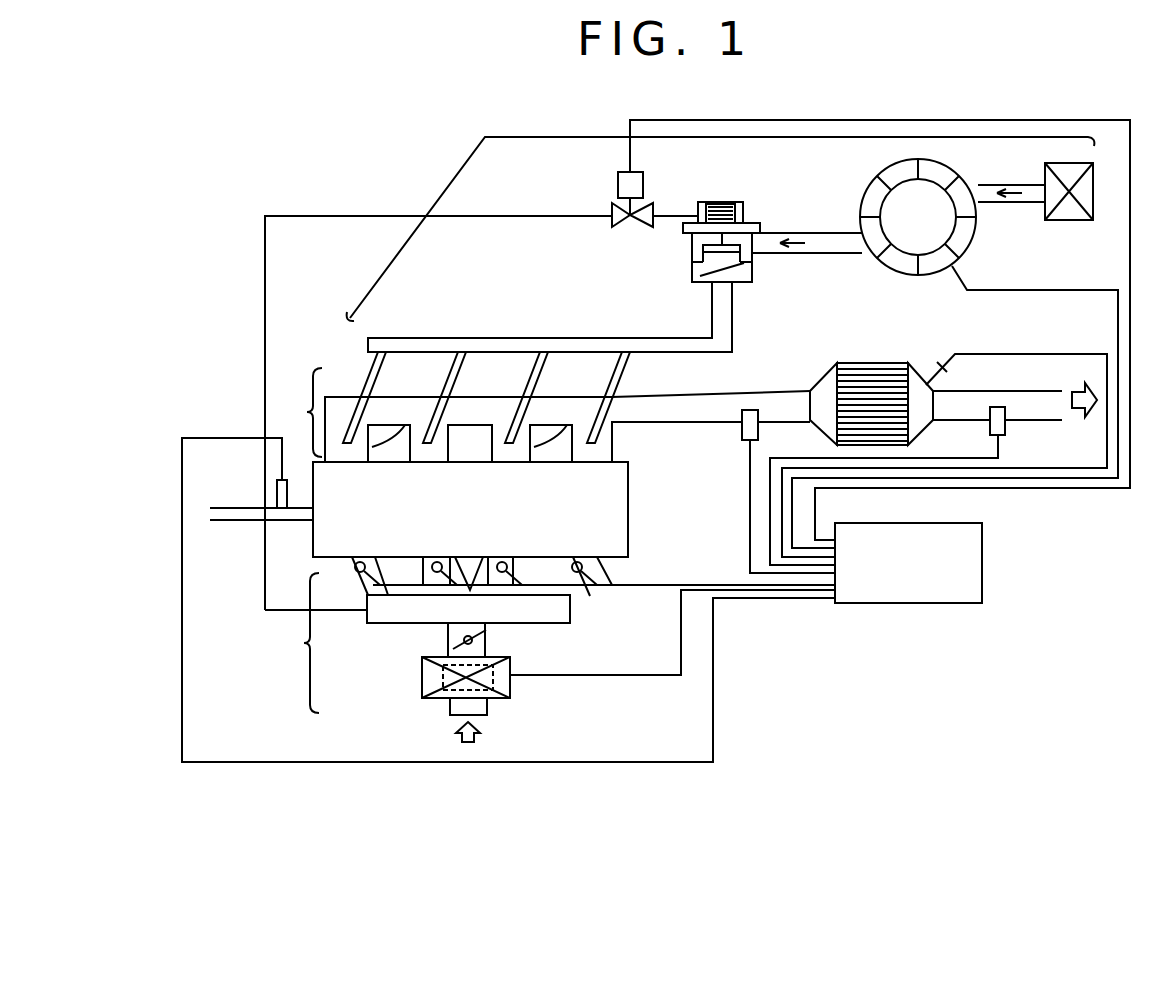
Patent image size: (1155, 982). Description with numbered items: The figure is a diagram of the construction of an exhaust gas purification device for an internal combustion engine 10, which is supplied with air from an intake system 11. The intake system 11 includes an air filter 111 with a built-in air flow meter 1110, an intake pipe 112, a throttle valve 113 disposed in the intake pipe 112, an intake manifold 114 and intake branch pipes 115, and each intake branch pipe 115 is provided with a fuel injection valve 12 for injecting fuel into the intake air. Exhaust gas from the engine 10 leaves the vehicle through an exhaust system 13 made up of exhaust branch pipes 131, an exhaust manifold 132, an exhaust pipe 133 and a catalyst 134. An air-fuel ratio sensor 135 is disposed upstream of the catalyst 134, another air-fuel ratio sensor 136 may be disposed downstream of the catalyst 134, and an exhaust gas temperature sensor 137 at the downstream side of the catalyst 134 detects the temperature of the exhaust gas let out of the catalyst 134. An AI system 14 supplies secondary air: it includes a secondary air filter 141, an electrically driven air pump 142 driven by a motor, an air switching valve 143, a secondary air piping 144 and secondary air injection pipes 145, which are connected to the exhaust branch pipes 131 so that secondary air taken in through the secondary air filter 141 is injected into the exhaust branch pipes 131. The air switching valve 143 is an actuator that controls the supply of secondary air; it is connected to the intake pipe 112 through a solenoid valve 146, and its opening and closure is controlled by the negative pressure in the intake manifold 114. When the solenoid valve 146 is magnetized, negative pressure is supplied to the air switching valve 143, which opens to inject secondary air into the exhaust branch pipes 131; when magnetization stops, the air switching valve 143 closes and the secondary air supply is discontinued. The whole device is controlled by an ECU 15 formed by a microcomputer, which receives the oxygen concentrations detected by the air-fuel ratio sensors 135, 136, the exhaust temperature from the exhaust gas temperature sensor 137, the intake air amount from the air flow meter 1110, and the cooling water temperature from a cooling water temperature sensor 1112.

The internal combustion engine 10 is at (628, 507).
The intake system 11 is at (297, 643).
The air filter 111 is at (510, 690).
The air flow meter 1110 is at (443, 680).
The cooling water temperature sensor 1112 is at (277, 490).
The intake pipe 112 is at (448, 640).
The throttle valve 113 is at (472, 640).
The intake manifold 114 is at (570, 610).
The intake branch pipes 115 is at (365, 560).
The fuel injection valve 12 is at (358, 576).
The exhaust system 13 is at (301, 412).
The exhaust branch pipes 131 is at (403, 425).
The exhaust manifold 132 is at (478, 400).
The exhaust pipe 133 is at (690, 400).
The catalyst 134 is at (890, 365).
The air-fuel ratio sensor 135 is at (742, 430).
The air-fuel ratio sensor 136 is at (1005, 425).
The exhaust gas temperature sensor 137 is at (950, 370).
The AI system 14 is at (721, 214).
The secondary air filter 141 is at (1065, 220).
The electrically driven air pump 142 is at (952, 168).
The air switching valve 143 is at (740, 282).
The secondary air piping 144 is at (548, 338).
The secondary air injection pipes 145 is at (360, 378).
The solenoid valve 146 is at (628, 228).
The ECU 15 is at (915, 603).